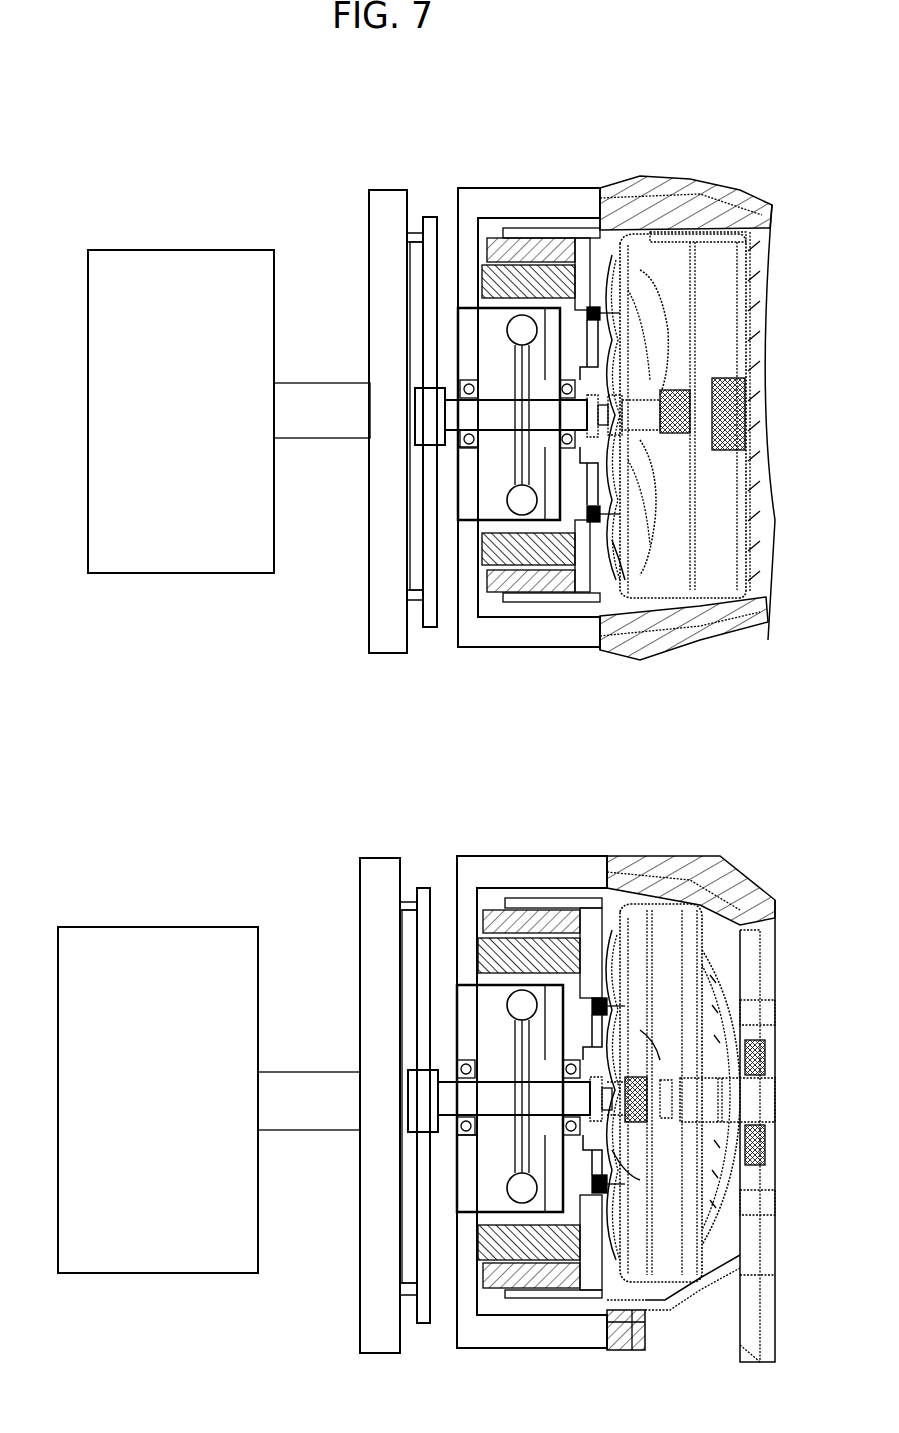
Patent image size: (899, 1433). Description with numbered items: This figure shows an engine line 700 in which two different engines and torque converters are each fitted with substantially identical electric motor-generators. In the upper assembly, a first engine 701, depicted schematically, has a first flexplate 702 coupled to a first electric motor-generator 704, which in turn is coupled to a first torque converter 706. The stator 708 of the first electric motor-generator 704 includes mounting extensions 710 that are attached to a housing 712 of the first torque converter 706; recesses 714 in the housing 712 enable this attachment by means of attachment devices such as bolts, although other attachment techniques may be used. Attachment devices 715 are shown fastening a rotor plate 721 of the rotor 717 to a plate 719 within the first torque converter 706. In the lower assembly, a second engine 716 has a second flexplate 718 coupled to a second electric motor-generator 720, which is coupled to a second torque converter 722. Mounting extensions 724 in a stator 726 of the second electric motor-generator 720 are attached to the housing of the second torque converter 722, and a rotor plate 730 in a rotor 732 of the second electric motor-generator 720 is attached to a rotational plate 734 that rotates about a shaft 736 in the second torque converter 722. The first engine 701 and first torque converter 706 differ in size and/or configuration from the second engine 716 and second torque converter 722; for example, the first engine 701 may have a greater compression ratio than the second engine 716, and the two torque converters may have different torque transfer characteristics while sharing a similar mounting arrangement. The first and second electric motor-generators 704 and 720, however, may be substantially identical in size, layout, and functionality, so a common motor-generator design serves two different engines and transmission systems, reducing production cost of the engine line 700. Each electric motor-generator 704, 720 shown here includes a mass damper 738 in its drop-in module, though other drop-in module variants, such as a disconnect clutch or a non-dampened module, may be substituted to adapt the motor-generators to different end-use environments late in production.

The engine line 700 is at (72, 106).
The first engine 701 is at (97, 250).
The first flexplate 702 is at (369, 232).
The first electric motor-generator 704 is at (600, 162).
The first torque converter 706 is at (792, 138).
The stator 708 is at (450, 197).
The mounting extensions 710 is at (568, 200).
The housing 712 is at (682, 185).
The recesses 714 is at (626, 190).
The attachment devices 715 is at (592, 322).
The second engine 716 is at (68, 927).
The rotor 717 is at (498, 234).
The second flexplate 718 is at (360, 902).
The plate 719 is at (640, 268).
The second electric motor-generator 720 is at (608, 835).
The rotor plate 721 is at (624, 562).
The second torque converter 722 is at (792, 835).
The mounting extensions 724 is at (576, 868).
The stator 726 is at (448, 870).
The rotor plate 730 is at (640, 1042).
The rotor 732 is at (500, 904).
The rotational plate 734 is at (630, 972).
The shaft 736 is at (640, 1162).
The mass damper 738 is at (494, 364).